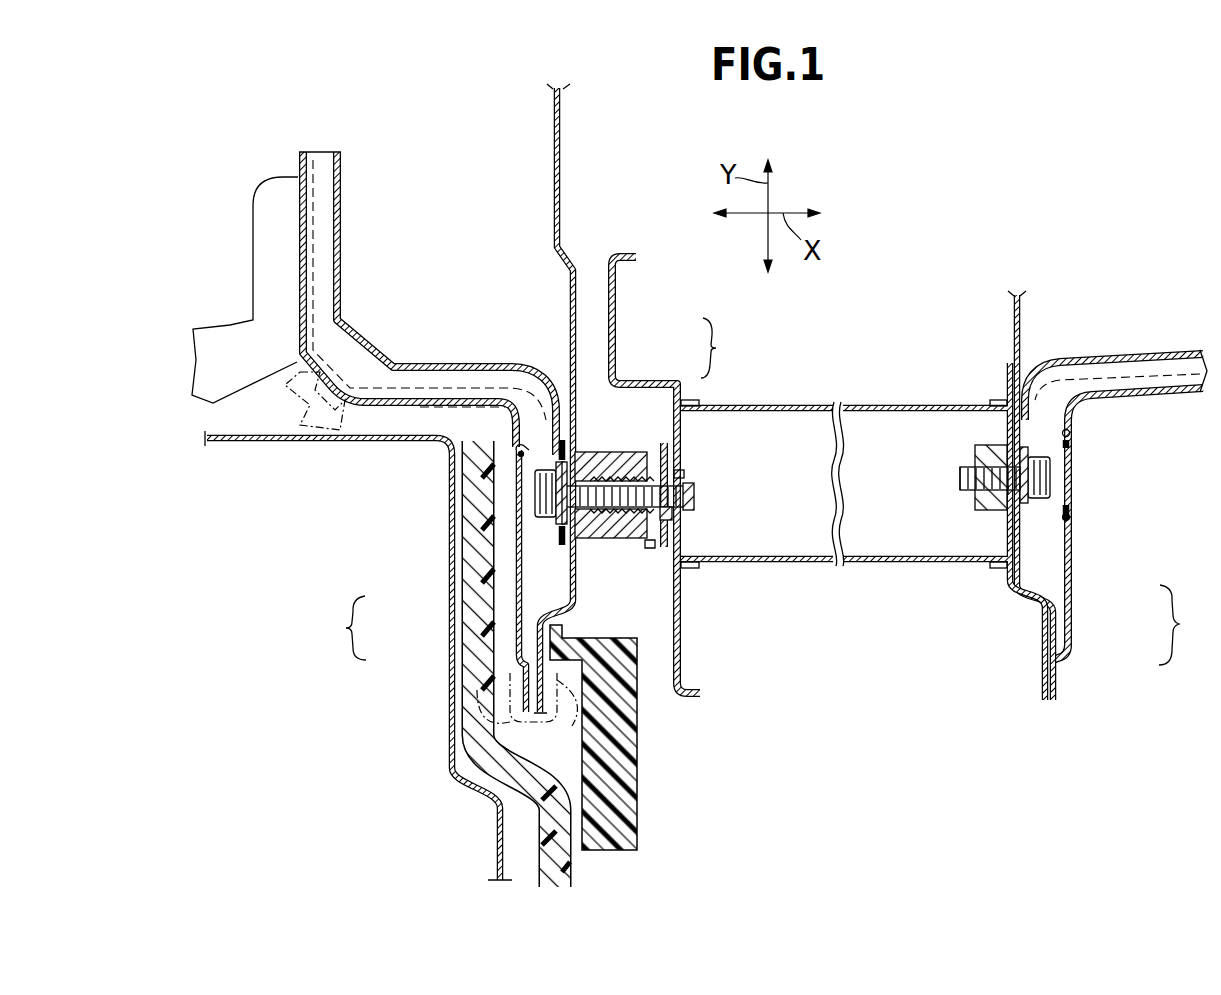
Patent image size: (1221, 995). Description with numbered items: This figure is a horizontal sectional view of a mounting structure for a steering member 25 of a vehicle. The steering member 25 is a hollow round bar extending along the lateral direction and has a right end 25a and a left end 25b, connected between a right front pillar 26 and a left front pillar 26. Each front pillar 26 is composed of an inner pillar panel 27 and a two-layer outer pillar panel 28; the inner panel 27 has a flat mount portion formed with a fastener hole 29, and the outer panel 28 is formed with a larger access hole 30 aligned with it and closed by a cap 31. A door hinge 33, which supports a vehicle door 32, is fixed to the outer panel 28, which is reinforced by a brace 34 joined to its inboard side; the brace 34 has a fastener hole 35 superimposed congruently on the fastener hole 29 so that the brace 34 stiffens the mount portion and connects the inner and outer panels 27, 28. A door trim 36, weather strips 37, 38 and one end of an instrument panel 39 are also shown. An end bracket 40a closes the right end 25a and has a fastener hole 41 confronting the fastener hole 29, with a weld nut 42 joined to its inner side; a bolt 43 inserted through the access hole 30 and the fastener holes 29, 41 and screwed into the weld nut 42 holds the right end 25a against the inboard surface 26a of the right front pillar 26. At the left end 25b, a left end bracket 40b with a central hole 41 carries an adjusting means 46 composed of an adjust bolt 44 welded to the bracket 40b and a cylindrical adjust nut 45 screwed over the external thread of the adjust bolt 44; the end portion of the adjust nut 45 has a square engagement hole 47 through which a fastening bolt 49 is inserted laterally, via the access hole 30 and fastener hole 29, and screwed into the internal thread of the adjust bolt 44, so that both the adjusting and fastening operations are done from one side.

The steering member 25 is at (880, 566).
The right end of the steering member 25a is at (965, 565).
The left end of the steering member 25b is at (716, 564).
The front pillar 26 is at (759, 625).
The inboard surface of the right front pillar 26a is at (576, 357).
The inner pillar panel 27 is at (572, 595).
The outer pillar panel 28 is at (568, 590).
The fastener hole 29 is at (537, 482).
The access hole 30 is at (449, 462).
The cap 31 is at (558, 498).
The vehicle door 32 is at (452, 773).
The door hinge 33 is at (253, 247).
The brace 34 is at (418, 368).
The fastener hole of the brace 35 is at (560, 522).
The door trim 36 is at (545, 858).
The weather strip 37 is at (568, 707).
The weather strip 38 is at (297, 402).
The instrument panel 39 is at (622, 847).
The end bracket 40a is at (1006, 378).
The left end bracket 40b is at (682, 676).
The fastener hole 41 is at (688, 490).
The weld nut 42 is at (975, 448).
The bolt 43 is at (1050, 500).
The adjust bolt 44 is at (662, 443).
The adjust nut 45 is at (628, 452).
The adjusting means 46 is at (687, 475).
The engagement hole 47 is at (598, 465).
The fastening bolt 49 is at (548, 468).